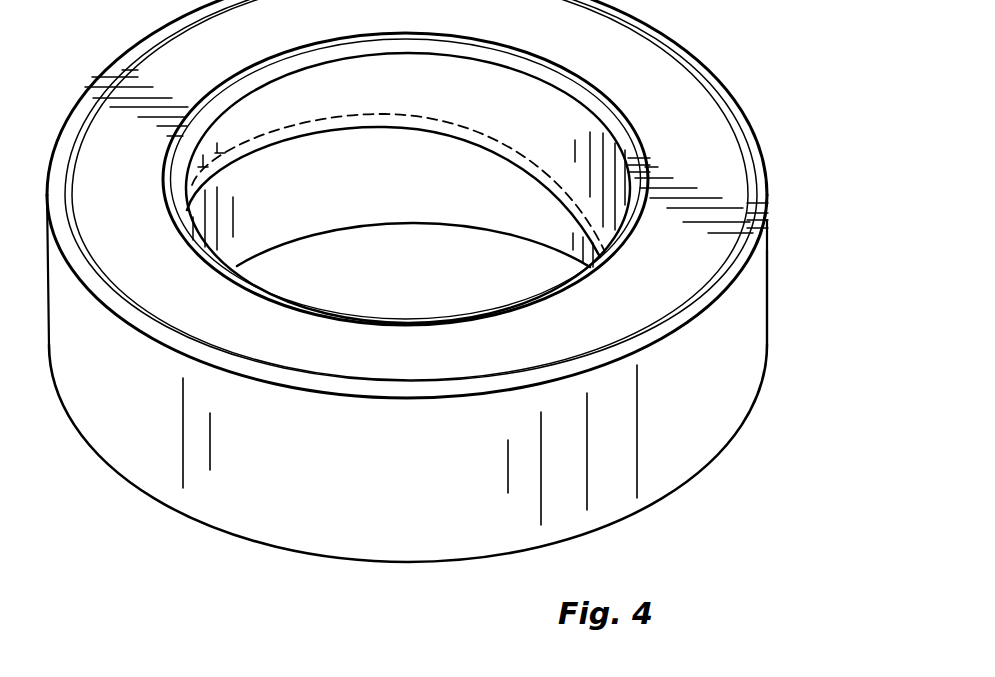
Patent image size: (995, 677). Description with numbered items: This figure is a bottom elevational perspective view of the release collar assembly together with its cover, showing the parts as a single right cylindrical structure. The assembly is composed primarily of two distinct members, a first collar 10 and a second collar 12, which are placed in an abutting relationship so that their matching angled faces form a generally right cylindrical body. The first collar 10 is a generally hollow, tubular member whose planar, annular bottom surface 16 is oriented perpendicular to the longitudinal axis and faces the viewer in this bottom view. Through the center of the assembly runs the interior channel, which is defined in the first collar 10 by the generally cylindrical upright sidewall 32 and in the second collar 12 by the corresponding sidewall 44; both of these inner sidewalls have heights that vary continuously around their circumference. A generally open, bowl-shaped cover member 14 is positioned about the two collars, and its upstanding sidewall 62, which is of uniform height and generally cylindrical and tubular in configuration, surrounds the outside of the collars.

The first collar 10 is at (421, 105).
The second collar 12 is at (289, 220).
The cover member 14 is at (471, 511).
The bottom surface 16 is at (696, 145).
The upright sidewall 32 is at (523, 129).
The sidewall 44 is at (403, 198).
The upstanding sidewall 62 is at (745, 342).